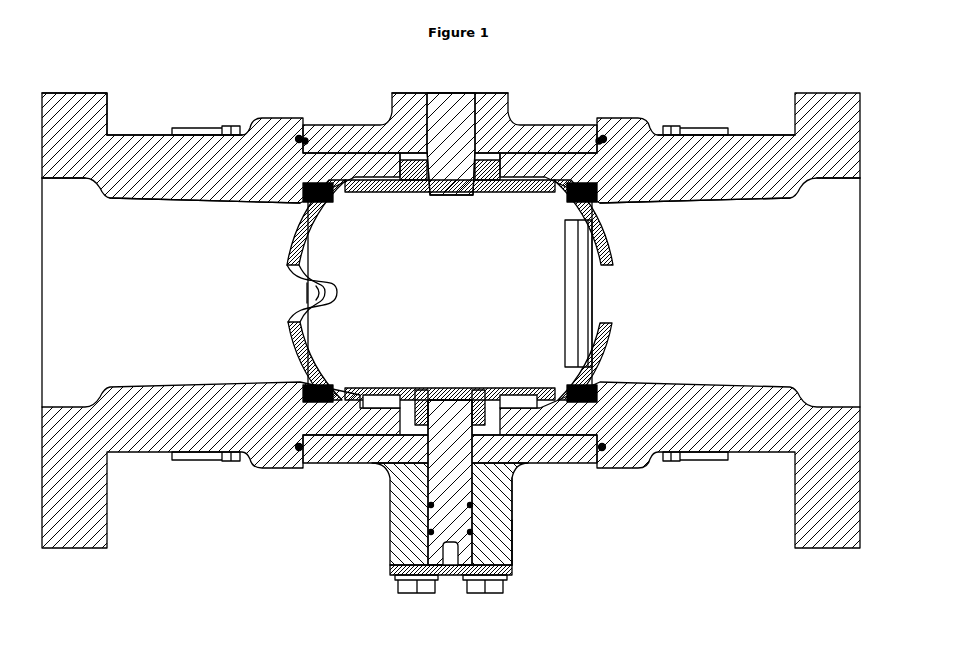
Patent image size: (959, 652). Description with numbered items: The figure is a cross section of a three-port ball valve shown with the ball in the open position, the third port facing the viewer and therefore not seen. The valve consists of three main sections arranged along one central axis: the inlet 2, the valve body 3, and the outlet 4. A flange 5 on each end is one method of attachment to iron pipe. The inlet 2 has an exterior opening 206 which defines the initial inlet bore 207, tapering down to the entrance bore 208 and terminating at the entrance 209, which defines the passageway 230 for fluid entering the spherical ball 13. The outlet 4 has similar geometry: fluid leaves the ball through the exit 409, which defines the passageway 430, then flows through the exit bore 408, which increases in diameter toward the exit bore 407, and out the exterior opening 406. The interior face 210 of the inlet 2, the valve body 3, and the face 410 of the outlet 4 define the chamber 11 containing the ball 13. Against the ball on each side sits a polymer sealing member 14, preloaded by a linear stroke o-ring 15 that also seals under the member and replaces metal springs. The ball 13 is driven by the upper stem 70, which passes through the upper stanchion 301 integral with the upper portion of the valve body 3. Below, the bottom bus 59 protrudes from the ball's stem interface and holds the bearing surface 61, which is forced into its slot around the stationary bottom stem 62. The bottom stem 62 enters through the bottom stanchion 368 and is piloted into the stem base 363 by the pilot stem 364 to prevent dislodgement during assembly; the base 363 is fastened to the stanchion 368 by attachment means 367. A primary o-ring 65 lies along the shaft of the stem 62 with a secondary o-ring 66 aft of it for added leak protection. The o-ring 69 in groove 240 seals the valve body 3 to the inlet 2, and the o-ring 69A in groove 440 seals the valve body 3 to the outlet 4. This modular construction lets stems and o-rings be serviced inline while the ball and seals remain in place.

The inlet 2 is at (186, 100).
The valve body 3 is at (448, 80).
The outlet 4 is at (740, 98).
The flange 5 is at (80, 85).
The chamber 11 is at (493, 420).
The ball 13 is at (615, 340).
The sealing member 14 is at (312, 398).
The linear stroke o-ring 15 is at (225, 462).
The bottom bus 59 is at (428, 402).
The bearing surface 61 is at (508, 477).
The bottom stem 62 is at (512, 530).
The bottom stem primary o-ring 65 is at (427, 505).
The secondary o-ring 66 is at (427, 532).
The o-ring 69 is at (306, 139).
The o-ring 69A is at (598, 138).
The upper stem 70 is at (447, 115).
The exterior opening 206 is at (40, 305).
The initial inlet bore 207 is at (72, 180).
The entrance bore 208 is at (115, 203).
The entrance 209 is at (305, 205).
The interior face 210 is at (400, 402).
The passageway 230 is at (262, 295).
The groove 240 is at (297, 137).
The upper stanchion 301 is at (393, 112).
The stem base 363 is at (392, 578).
The pilot stem 364 is at (450, 560).
The attachment means 367 is at (500, 593).
The bottom stanchion 368 is at (390, 540).
The exterior opening 406 is at (862, 305).
The exit bore 407 is at (840, 182).
The exit bore 408 is at (718, 202).
The exit 409 is at (597, 209).
The face 410 is at (545, 456).
The passageway 430 is at (612, 295).
The body seal 440 is at (605, 137).